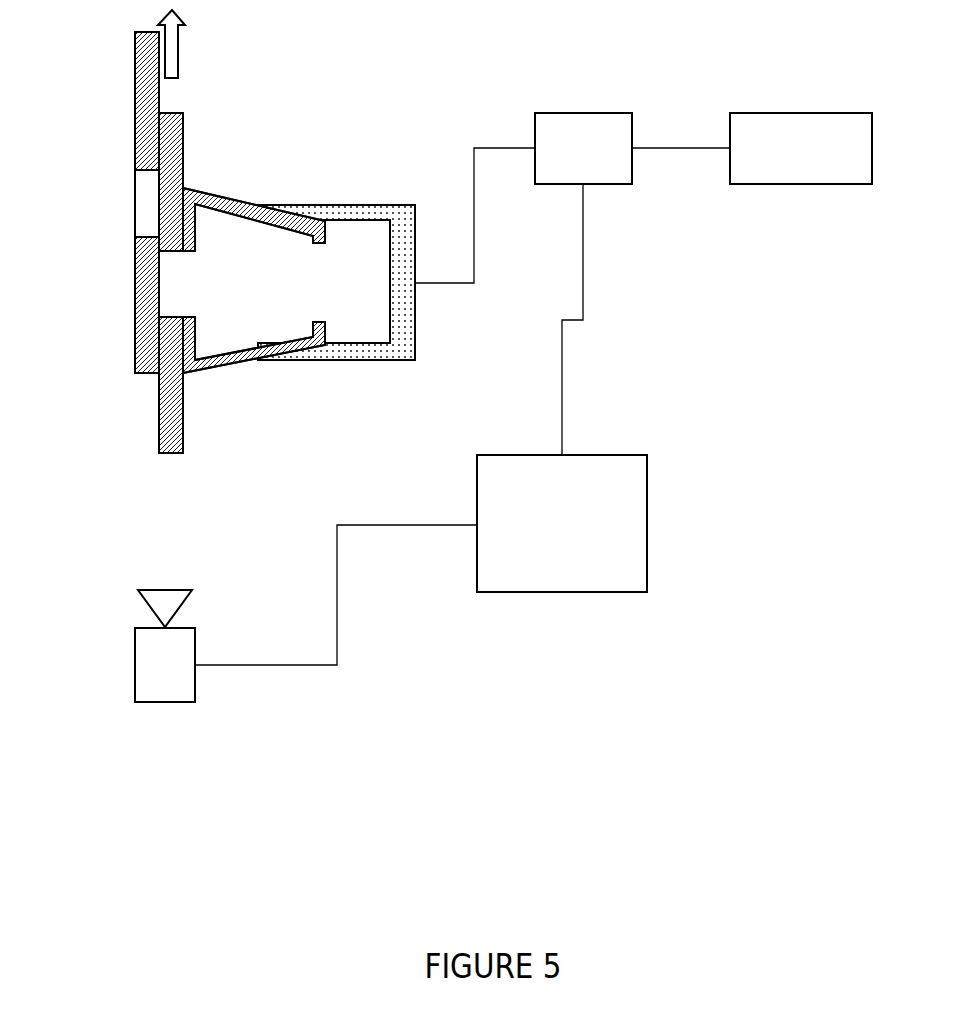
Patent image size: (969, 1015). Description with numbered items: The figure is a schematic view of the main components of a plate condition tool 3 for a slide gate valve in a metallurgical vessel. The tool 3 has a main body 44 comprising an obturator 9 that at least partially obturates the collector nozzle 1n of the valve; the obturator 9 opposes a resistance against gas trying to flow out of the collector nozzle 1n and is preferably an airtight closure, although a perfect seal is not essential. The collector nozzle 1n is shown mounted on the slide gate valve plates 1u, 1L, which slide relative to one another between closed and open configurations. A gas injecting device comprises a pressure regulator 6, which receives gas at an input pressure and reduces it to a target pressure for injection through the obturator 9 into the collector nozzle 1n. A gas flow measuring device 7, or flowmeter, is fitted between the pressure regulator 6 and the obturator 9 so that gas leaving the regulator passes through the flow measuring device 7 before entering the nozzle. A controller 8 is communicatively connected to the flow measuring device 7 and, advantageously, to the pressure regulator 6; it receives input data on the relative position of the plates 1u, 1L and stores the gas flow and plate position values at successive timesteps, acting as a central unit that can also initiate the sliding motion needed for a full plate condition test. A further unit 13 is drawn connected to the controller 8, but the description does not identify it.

The upper slide gate valve plate 1u is at (138, 110).
The lower slide gate valve plate 1L is at (175, 170).
The collector nozzle 1n is at (213, 370).
The main body 44 is at (407, 180).
The obturator 9 is at (405, 332).
The gas flow measuring device 7 is at (583, 148).
The pressure regulator 6 is at (801, 148).
The controller 8 is at (562, 523).
The wireless transmitter 13 is at (192, 703).
The plate condition tool 3 is at (703, 462).